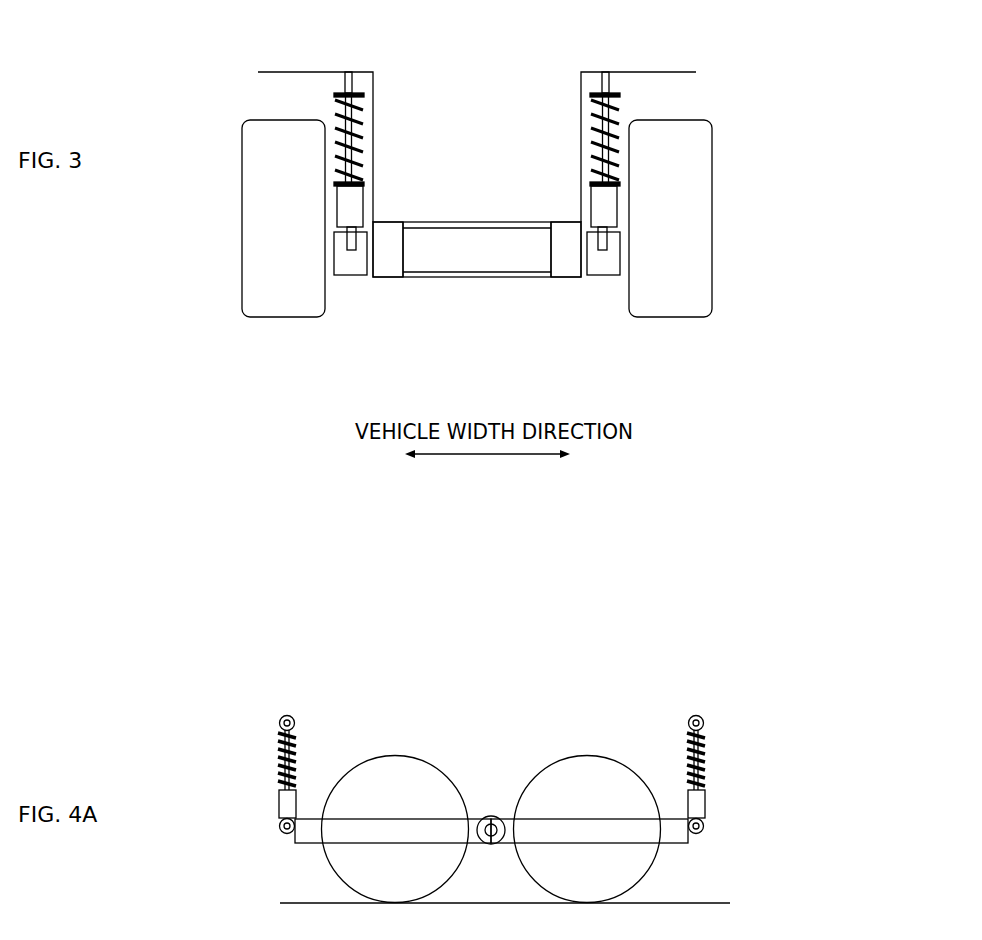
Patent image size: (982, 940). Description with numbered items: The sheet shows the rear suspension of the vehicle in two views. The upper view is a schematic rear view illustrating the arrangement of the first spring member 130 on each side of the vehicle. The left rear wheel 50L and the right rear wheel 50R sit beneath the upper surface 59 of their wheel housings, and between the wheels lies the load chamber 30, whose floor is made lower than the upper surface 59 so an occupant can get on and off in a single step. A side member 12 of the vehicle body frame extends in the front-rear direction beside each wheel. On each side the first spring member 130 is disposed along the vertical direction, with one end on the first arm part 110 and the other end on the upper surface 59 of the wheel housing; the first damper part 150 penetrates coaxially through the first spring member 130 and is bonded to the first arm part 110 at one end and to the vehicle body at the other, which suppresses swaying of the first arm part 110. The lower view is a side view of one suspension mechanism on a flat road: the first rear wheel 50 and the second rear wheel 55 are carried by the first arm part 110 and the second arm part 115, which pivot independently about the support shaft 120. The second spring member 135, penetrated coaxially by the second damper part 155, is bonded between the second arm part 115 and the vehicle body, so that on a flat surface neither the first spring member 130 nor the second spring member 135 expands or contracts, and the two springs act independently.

In FIG. 3, the upper surface of wheel housing 59 is at (308, 70).
In FIG. 3, the load chamber 30 is at (492, 181).
In FIG. 3, the side member 12 is at (398, 282).
In FIG. 3, the first spring member 130 is at (362, 133).
In FIG. 4A, the first spring member 130 is at (705, 763).
In FIG. 4A, the second spring member 135 is at (277, 763).
In FIG. 3, the first damper part 150 is at (345, 80).
In FIG. 4A, the first damper part 150 is at (704, 723).
In FIG. 4A, the second damper part 155 is at (279, 723).
In FIG. 3, the first arm part 110 is at (352, 278).
In FIG. 4A, the first arm part 110 is at (663, 818).
In FIG. 4A, the second arm part 115 is at (322, 818).
In FIG. 4A, the support shaft 120 is at (488, 816).
In FIG. 3, the left rear wheel 50L is at (243, 222).
In FIG. 3, the right rear wheel 50R is at (712, 215).
In FIG. 4A, the first rear wheel 50 is at (590, 756).
In FIG. 4A, the second rear wheel 55 is at (402, 756).